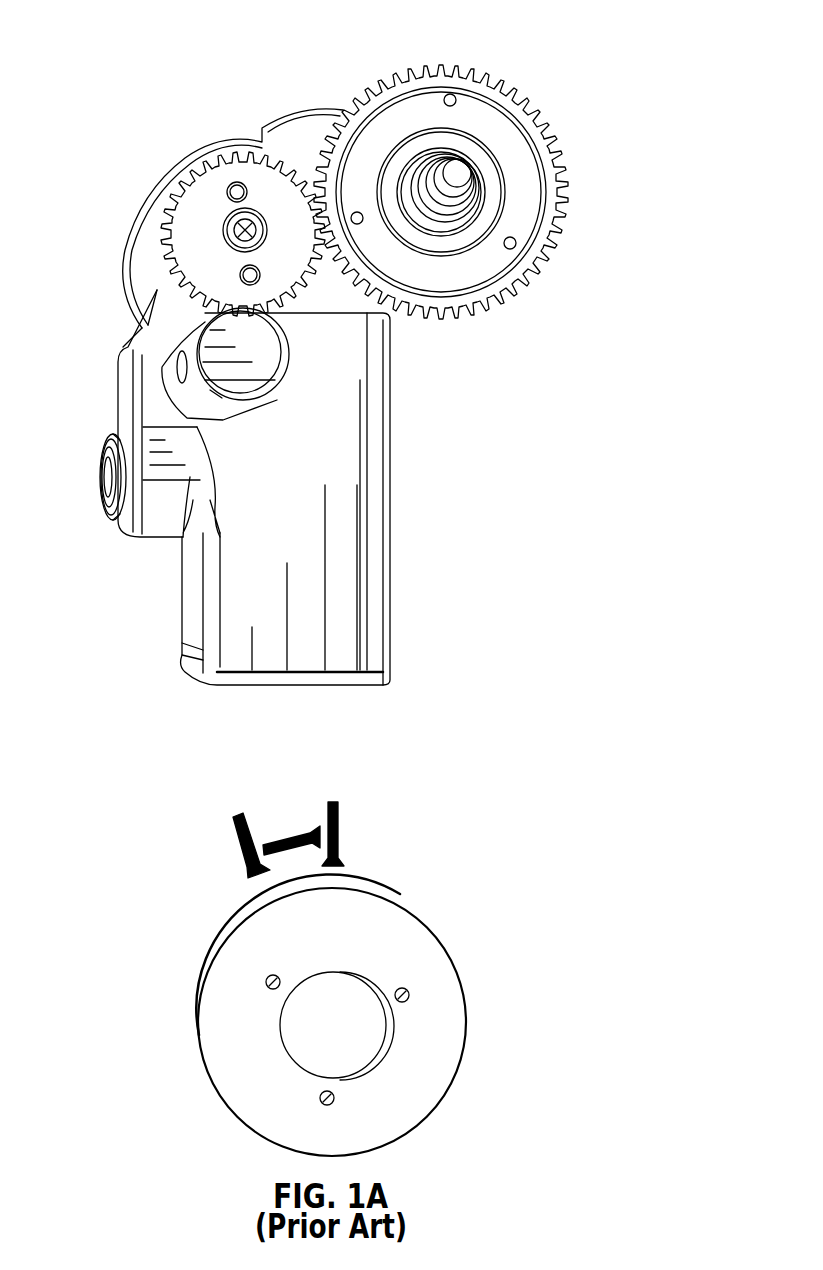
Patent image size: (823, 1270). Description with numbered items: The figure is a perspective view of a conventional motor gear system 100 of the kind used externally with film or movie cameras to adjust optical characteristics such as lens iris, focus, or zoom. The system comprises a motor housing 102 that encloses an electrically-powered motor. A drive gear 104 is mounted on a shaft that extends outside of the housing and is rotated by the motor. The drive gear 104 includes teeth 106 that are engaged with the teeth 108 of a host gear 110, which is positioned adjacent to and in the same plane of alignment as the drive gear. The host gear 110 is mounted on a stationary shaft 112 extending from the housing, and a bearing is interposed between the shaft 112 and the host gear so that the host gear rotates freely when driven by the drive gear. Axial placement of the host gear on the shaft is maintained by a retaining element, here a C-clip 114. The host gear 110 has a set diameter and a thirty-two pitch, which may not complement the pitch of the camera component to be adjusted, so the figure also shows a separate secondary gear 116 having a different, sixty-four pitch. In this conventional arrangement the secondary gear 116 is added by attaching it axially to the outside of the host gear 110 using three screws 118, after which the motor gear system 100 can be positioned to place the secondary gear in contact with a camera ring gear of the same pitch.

The motor gear system 100 is at (657, 45).
The motor housing 102 is at (407, 502).
The drive gear 104 is at (223, 160).
The teeth 106 is at (127, 400).
The teeth 108 is at (562, 215).
The host gear 110 is at (528, 122).
The stationary shaft 112 is at (465, 150).
The C-clip 114 is at (525, 260).
The secondary gear 116 is at (430, 995).
The screws 118 is at (342, 813).